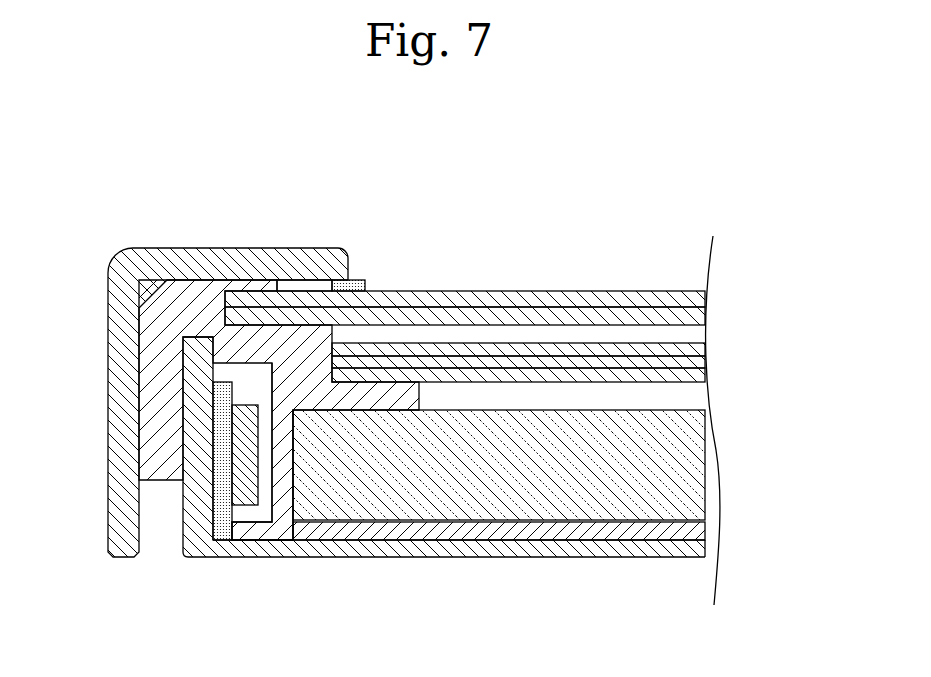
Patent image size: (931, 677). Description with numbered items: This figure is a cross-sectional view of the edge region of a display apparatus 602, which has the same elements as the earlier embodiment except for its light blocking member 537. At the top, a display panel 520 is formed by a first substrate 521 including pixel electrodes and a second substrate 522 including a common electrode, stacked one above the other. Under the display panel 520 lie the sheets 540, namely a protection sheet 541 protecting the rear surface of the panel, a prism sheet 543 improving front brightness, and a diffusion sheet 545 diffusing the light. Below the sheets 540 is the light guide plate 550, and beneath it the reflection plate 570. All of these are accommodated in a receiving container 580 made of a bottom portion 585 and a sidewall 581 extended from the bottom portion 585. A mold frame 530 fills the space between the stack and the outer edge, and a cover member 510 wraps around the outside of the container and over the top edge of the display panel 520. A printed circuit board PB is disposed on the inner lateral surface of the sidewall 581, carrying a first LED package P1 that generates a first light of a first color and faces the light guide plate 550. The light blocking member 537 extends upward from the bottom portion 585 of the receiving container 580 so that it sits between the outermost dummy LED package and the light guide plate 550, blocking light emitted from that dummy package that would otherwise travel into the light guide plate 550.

The cover member 510 is at (121, 390).
The mold frame 530 is at (158, 355).
The display panel 520 is at (528, 294).
The first substrate 521 is at (694, 317).
The second substrate 522 is at (703, 298).
The sheets 540 is at (582, 365).
The protection sheet 541 is at (696, 352).
The prism sheet 543 is at (694, 362).
The diffusion sheet 545 is at (557, 385).
The light guide plate 550 is at (702, 465).
The reflection plate 570 is at (701, 530).
The receiving container 580 is at (467, 494).
The sidewall 581 is at (190, 510).
The bottom portion 585 is at (360, 550).
The light blocking member 537 is at (276, 490).
The printed circuit board PB is at (222, 425).
The first LED package P1 is at (243, 460).
The display apparatus 602 is at (611, 202).